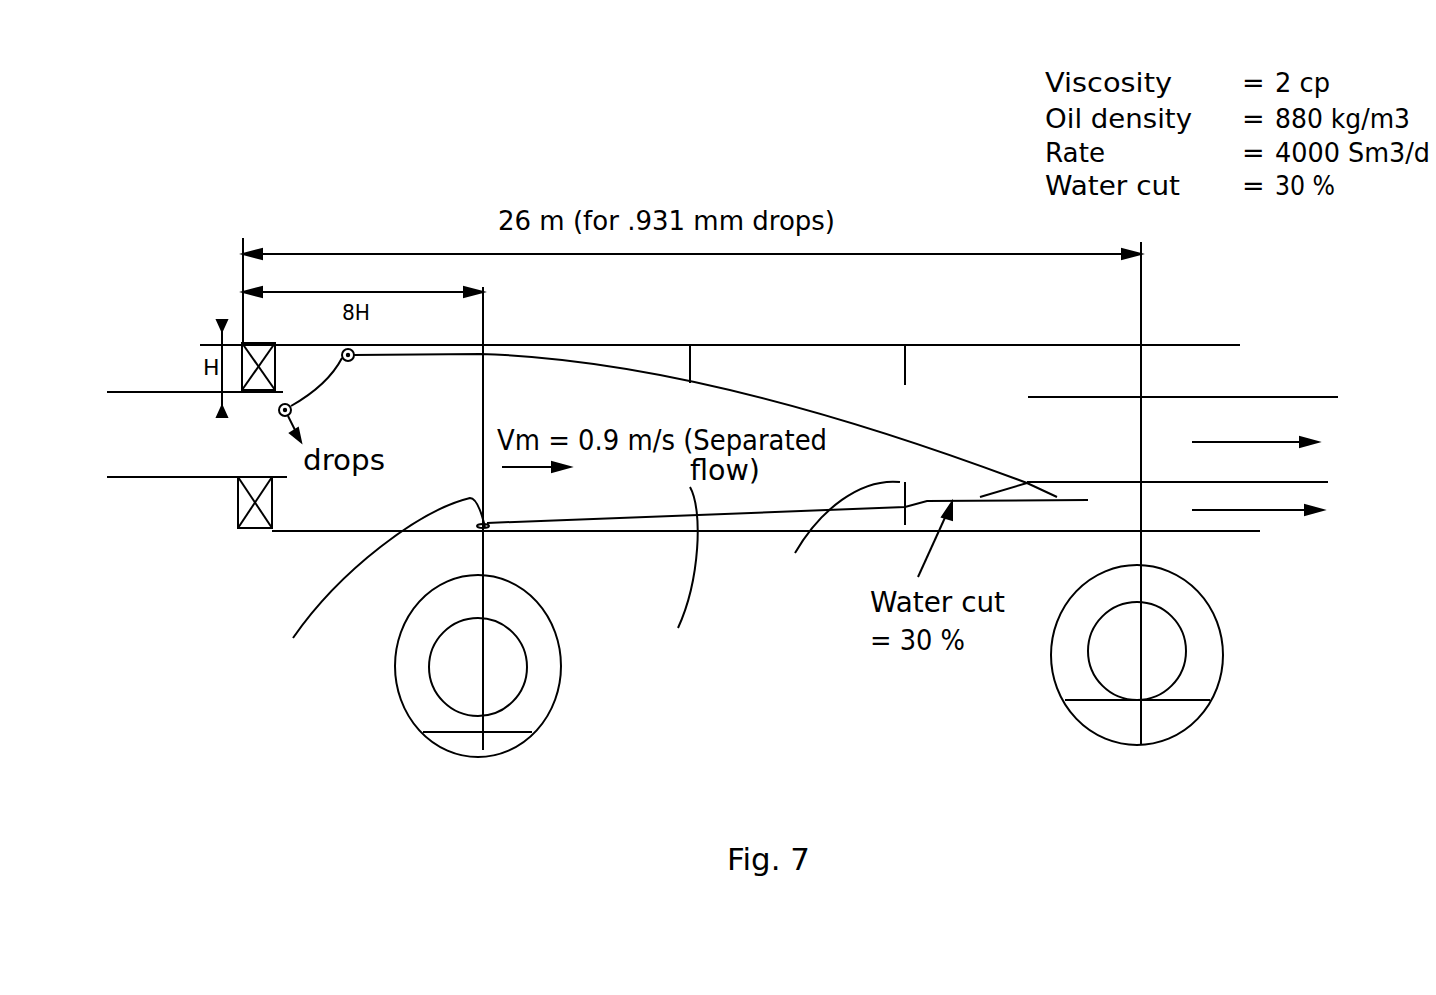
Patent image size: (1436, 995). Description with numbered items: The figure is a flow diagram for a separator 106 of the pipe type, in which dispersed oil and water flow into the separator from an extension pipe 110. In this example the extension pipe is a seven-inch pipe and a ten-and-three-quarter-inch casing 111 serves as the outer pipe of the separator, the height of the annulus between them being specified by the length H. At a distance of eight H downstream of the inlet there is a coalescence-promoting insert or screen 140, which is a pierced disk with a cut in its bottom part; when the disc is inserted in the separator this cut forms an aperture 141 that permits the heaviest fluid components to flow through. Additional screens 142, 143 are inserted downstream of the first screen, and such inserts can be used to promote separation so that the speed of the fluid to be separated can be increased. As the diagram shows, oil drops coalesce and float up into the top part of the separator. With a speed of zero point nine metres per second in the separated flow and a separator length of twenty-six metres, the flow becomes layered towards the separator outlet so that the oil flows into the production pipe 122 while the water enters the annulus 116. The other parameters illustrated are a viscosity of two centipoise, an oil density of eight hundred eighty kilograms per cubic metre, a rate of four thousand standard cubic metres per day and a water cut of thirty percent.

The separator 106 is at (901, 310).
The extension pipe 110 is at (148, 390).
The casing 111 is at (277, 532).
The annulus 116 is at (1155, 503).
The production pipe 122 is at (1283, 398).
The coalescence-promoting insert or screen 140 is at (377, 586).
The aperture 141 is at (493, 531).
The additional screen 142 is at (683, 582).
The additional screen 143 is at (835, 544).